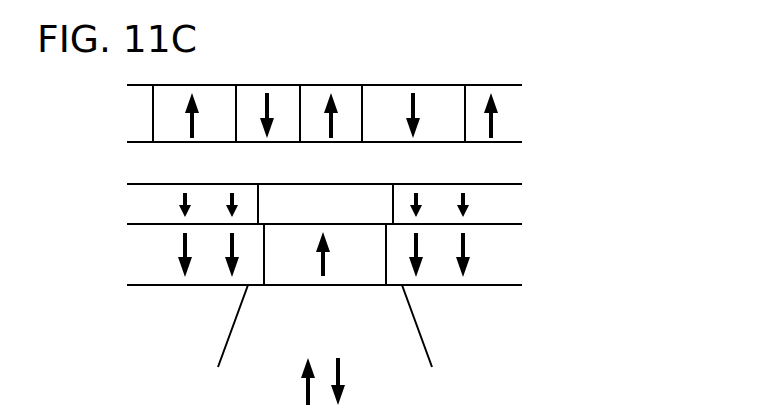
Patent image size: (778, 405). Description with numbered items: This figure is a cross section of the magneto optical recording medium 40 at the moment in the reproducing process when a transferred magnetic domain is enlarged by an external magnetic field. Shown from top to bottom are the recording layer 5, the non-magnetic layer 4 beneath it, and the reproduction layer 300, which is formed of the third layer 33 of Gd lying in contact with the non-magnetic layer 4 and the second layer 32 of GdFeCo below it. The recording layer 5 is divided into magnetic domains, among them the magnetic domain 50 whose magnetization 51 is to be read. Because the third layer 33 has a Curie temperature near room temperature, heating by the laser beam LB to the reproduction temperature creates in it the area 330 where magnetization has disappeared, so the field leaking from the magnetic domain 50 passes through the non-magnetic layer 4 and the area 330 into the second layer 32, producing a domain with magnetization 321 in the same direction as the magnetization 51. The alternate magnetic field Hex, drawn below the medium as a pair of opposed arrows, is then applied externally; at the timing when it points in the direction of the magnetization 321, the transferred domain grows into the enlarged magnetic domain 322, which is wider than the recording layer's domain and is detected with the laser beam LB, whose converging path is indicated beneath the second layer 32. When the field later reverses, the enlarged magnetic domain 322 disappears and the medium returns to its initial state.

The magneto optical recording medium 40 is at (533, 80).
The recording layer 5 is at (515, 110).
The magnetization 51 is at (324, 108).
The magnetic domain 50 is at (348, 97).
The non-magnetic layer 4 is at (517, 163).
The reproduction layer 300 is at (593, 195).
The third layer 33 is at (517, 210).
The second layer 32 is at (517, 262).
The area where magnetization has disappeared 330 is at (350, 200).
The magnetization 321 is at (320, 247).
The enlarged magnetic domain 322 is at (353, 285).
The laser beam LB is at (408, 325).
The alternate magnetic field Hex is at (350, 385).